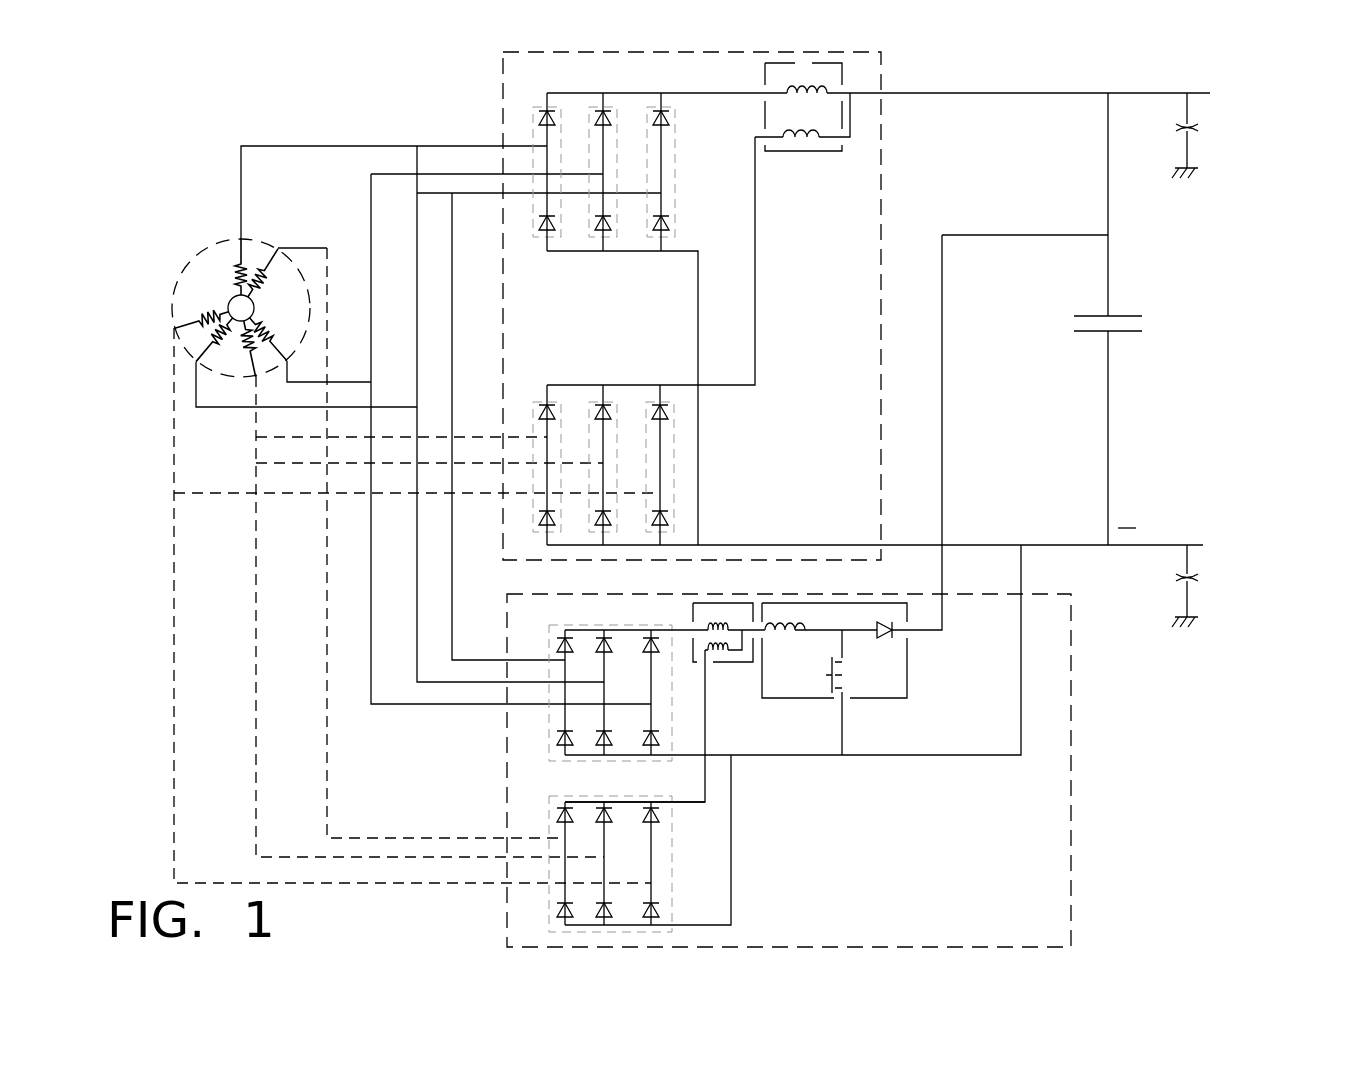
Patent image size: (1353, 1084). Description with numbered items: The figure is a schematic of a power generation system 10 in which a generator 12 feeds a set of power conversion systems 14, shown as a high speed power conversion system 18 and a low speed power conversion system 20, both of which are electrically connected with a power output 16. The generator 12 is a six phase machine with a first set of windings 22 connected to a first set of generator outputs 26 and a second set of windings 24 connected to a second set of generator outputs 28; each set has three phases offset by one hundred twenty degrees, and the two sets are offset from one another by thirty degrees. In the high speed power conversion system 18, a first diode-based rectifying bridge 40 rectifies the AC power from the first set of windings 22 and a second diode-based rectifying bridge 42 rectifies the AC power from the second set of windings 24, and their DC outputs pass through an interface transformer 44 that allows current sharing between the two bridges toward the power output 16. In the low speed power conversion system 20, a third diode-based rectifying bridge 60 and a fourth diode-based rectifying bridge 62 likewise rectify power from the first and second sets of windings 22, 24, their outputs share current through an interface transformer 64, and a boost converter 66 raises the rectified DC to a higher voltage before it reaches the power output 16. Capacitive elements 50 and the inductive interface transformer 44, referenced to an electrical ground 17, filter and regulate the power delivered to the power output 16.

The power generation system 10 is at (193, 102).
The generator 12 is at (210, 242).
The set of power conversion systems 14 is at (990, 88).
The power output 16 is at (1140, 92).
The electrical ground 17 is at (1206, 176).
The high speed power conversion system 18 is at (881, 175).
The low speed power conversion system 20 is at (1072, 674).
The first set of windings 22 is at (175, 268).
The second set of windings 24 is at (160, 305).
The first set of generator outputs 26 is at (470, 193).
The second set of generator outputs 28 is at (270, 438).
The first diode-based rectifying bridge 40 is at (680, 190).
The second diode-based rectifying bridge 42 is at (680, 464).
The interface transformer 44 is at (800, 158).
The capacitive elements 50 is at (1205, 120).
The third diode-based rectifying bridge 60 is at (680, 722).
The fourth diode-based rectifying bridge 62 is at (682, 878).
The interface transformer 64 is at (730, 670).
The boost converter 66 is at (914, 697).